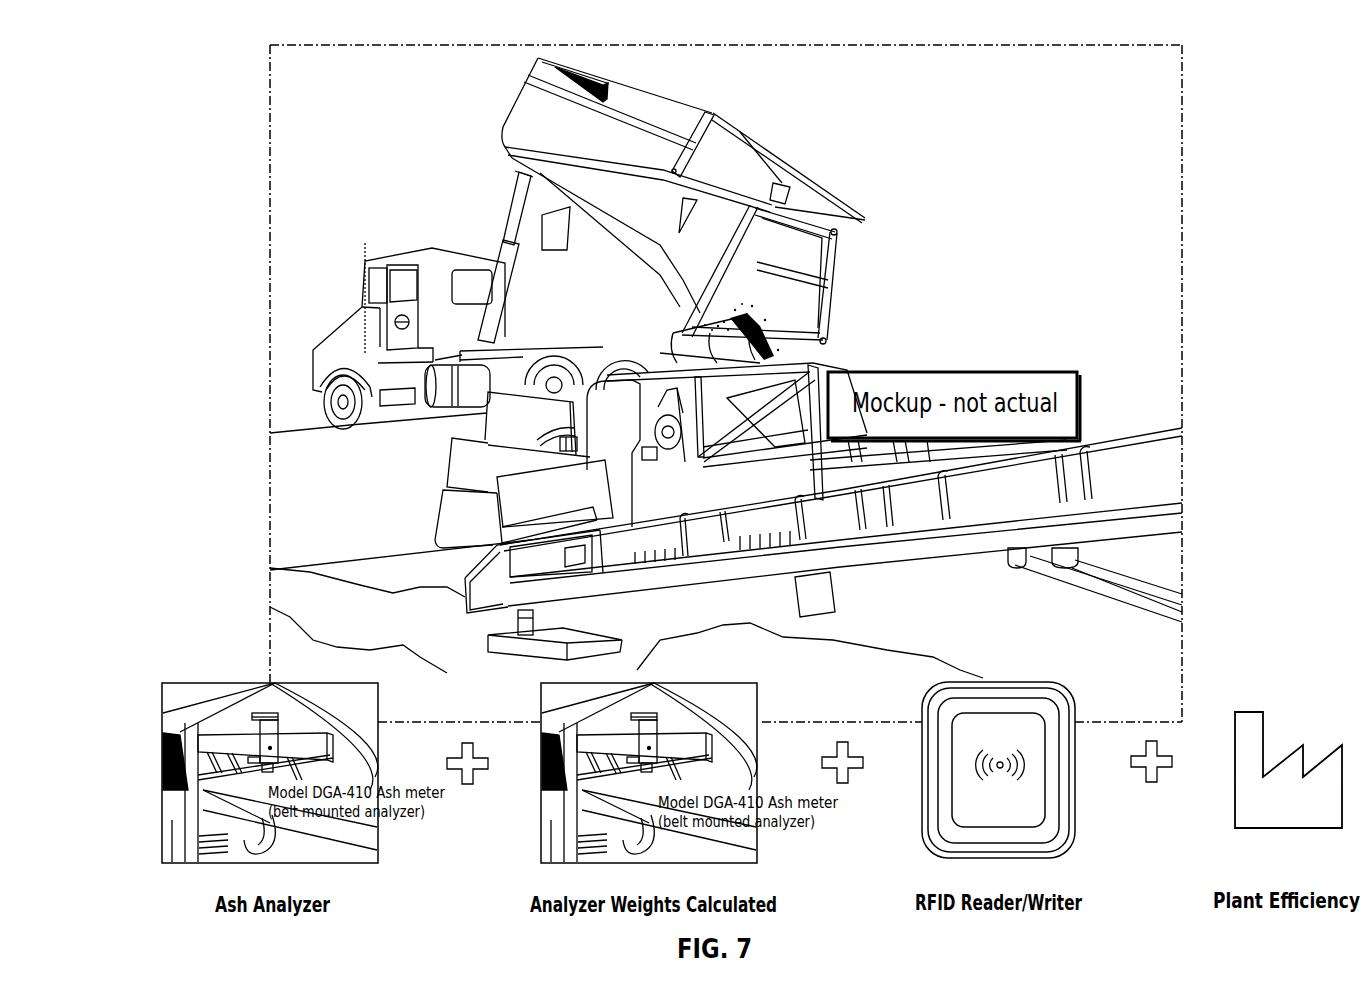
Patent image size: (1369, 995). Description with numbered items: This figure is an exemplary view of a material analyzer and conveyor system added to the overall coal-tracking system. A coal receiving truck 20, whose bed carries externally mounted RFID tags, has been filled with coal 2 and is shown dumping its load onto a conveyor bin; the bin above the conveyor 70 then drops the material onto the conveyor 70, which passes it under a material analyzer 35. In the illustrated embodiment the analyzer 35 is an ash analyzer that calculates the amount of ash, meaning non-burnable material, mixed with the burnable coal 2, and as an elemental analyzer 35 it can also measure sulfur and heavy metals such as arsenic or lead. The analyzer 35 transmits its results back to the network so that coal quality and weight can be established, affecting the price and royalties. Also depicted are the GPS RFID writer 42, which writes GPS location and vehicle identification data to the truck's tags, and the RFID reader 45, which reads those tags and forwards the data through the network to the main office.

The coal 2 is at (770, 362).
The coal receiving truck 20 is at (343, 279).
The material analyzer 35 is at (163, 823).
The GPS RFID writer 42 is at (925, 838).
The RFID reader 45 is at (1010, 845).
The conveyor 70 is at (557, 588).